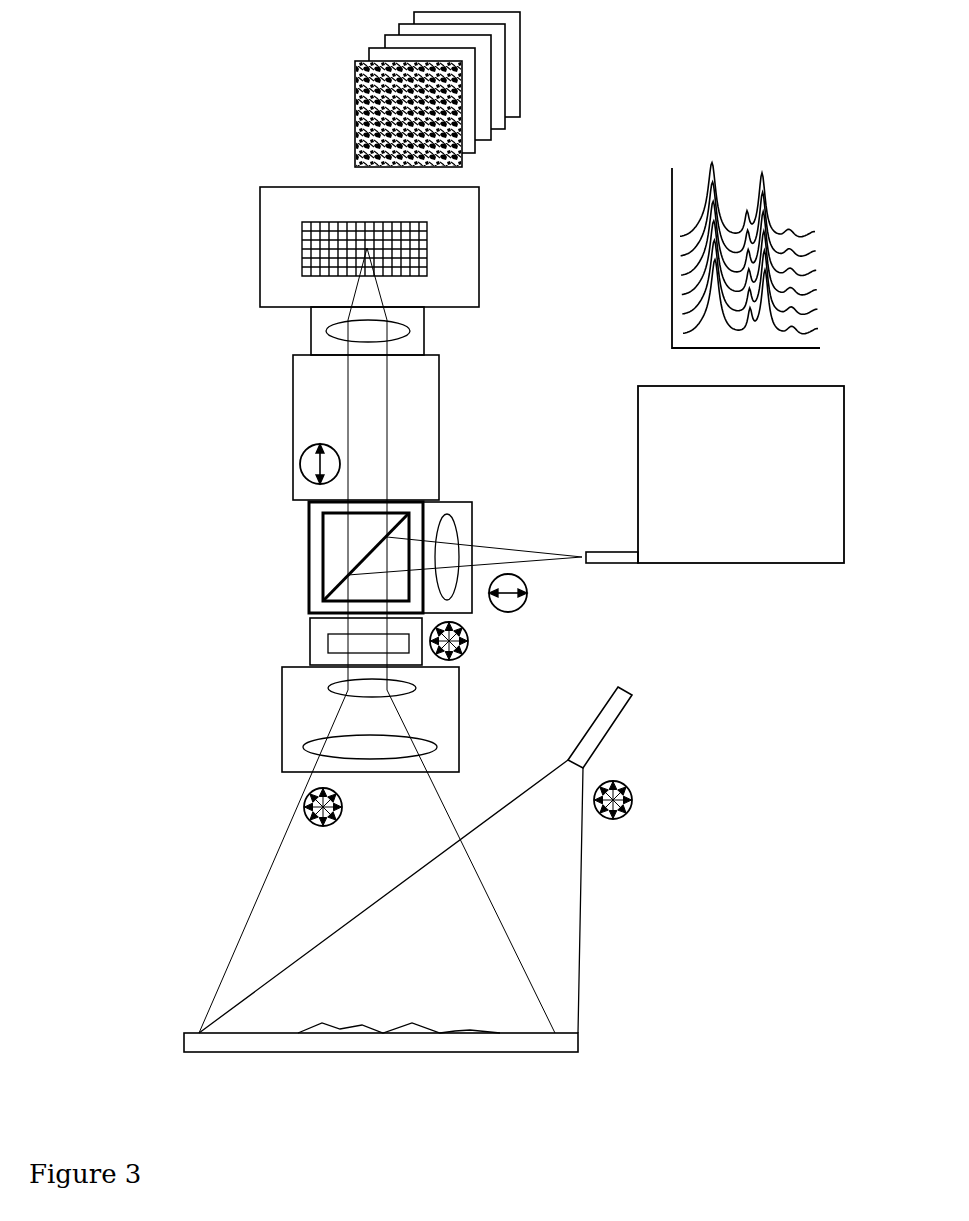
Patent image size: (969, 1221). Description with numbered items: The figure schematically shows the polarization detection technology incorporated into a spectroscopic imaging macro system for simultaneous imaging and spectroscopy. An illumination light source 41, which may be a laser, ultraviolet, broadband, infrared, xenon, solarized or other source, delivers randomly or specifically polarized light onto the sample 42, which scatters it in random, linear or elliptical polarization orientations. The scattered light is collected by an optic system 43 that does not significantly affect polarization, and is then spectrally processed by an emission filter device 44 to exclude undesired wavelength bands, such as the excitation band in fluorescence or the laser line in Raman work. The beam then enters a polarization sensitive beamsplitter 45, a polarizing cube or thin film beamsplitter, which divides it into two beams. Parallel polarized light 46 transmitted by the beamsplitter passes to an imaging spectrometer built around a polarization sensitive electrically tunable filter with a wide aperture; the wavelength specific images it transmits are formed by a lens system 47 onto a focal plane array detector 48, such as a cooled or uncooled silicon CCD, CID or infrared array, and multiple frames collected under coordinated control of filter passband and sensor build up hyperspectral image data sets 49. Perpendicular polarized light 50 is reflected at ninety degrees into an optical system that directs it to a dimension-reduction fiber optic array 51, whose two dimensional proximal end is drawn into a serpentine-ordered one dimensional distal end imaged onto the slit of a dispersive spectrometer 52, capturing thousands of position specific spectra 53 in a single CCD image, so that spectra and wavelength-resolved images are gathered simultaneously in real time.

The illumination light source 41 is at (441, 860).
The sample 42 is at (381, 1058).
The optic system 43 is at (377, 850).
The emission filter device 44 is at (370, 641).
The polarization sensitive beamsplitter 45 is at (428, 557).
The parallel polarized light 46 is at (343, 505).
The lens system 47 is at (336, 331).
The focal plane array detector 48 is at (397, 253).
The hyperspectral image data sets 49 is at (469, 89).
The perpendicular polarized light 50 is at (500, 570).
The dimension-reduction fiber optic array 51 is at (612, 538).
The dispersive spectrometer 52 is at (741, 474).
The position specific spectra 53 is at (716, 255).